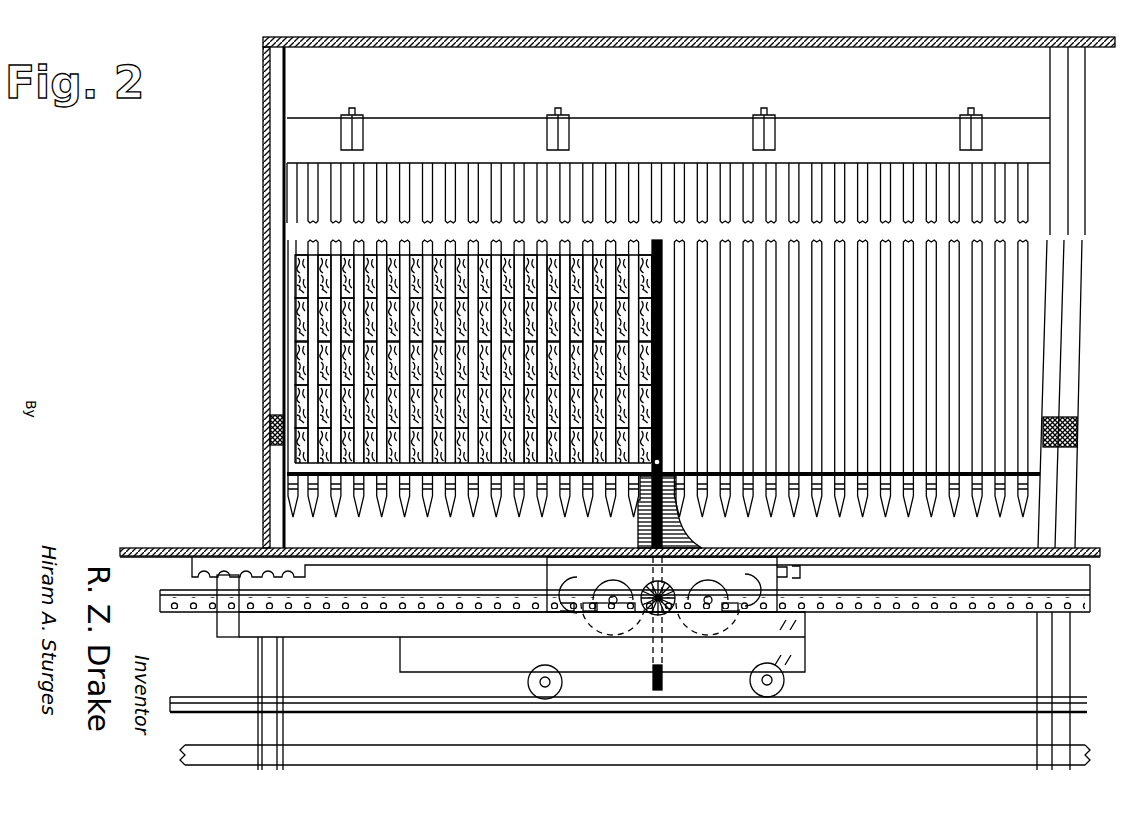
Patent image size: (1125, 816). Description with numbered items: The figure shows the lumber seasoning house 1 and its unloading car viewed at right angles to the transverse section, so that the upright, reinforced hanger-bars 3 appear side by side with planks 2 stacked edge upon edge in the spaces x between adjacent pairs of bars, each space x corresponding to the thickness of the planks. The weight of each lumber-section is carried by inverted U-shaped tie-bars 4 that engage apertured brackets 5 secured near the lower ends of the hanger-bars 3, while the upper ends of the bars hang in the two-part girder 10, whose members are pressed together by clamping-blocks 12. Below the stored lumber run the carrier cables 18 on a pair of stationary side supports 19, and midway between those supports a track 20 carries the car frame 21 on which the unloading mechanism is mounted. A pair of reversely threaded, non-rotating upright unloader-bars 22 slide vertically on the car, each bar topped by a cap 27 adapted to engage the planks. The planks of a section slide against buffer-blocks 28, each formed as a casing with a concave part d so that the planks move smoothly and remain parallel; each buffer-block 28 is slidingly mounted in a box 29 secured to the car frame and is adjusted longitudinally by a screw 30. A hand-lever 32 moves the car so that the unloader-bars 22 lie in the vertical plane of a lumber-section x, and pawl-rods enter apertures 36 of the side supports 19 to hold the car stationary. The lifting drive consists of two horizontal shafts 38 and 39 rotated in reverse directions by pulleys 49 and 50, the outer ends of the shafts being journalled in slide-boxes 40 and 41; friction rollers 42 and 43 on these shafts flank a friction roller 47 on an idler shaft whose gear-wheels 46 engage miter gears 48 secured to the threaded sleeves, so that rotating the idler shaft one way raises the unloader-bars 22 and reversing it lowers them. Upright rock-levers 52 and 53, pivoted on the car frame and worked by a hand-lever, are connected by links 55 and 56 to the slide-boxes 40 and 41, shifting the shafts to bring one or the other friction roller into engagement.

The seasoning house 1 is at (278, 242).
The planks 2 is at (302, 318).
The hanger-bars 3 is at (1003, 318).
The tie-bars 4 is at (1035, 478).
The apertured brackets 5 is at (1030, 487).
The two-part girder 10 is at (860, 120).
The clamping-blocks 12 is at (776, 114).
The cables 18 is at (142, 609).
The stationary side supports 19 is at (1090, 612).
The track 20 is at (926, 701).
The car frame 21 is at (810, 659).
The unloader-bars 22 is at (664, 683).
The cap 27 is at (664, 458).
The buffer-blocks 28 is at (641, 532).
The box 29 is at (780, 562).
The screw 30 is at (800, 582).
The hand-lever 32 is at (810, 572).
The apertures 36 is at (949, 613).
The horizontal shaft 38 is at (662, 611).
The horizontal shaft 39 is at (612, 606).
The slide-box 40 is at (735, 612).
The slide-box 41 is at (620, 612).
The friction roller 42 is at (748, 562).
The friction roller 43 is at (593, 583).
The gear-wheels 46 is at (692, 615).
The friction roller 47 is at (657, 582).
The miter gears 48 is at (712, 562).
The pulley 49 is at (787, 574).
The pulley 50 is at (588, 593).
The rock-lever 52 is at (760, 602).
The rock-lever 53 is at (560, 605).
The link 55 is at (742, 616).
The link 56 is at (590, 609).
The spaces x is at (1012, 370).
The concave part d is at (676, 534).